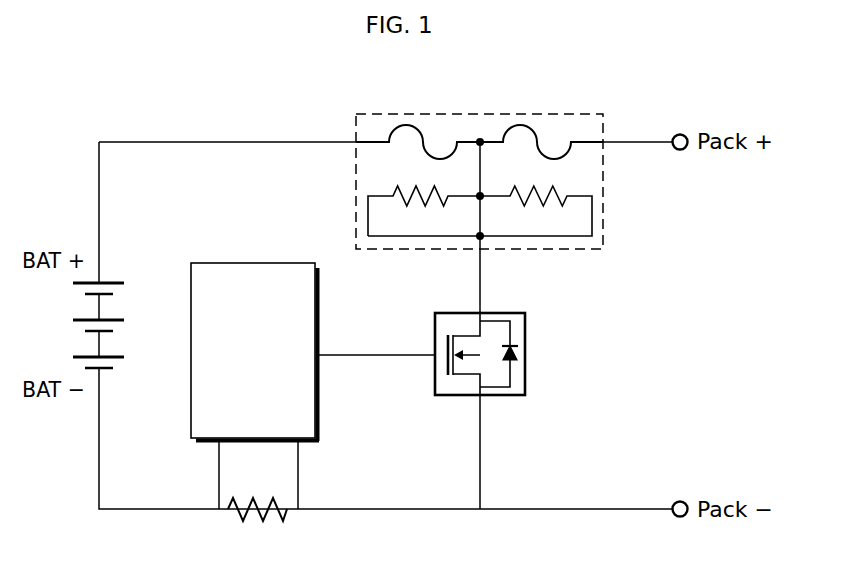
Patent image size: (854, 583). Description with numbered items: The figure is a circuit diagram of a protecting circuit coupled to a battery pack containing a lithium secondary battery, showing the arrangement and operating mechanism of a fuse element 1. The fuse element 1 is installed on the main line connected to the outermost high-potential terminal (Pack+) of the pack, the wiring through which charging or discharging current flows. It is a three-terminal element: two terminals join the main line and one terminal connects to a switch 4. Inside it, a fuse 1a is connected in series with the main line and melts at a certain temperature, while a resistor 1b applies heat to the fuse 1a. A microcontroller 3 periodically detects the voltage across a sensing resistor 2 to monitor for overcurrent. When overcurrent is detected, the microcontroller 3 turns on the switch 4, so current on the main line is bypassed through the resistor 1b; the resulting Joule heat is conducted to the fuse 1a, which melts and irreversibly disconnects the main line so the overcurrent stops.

The fuse element 1 is at (570, 112).
The fuse 1a is at (408, 123).
The resistor 1b is at (415, 205).
The sensing resistor 2 is at (255, 522).
The microcontroller 3 is at (254, 262).
The switch 4 is at (526, 355).